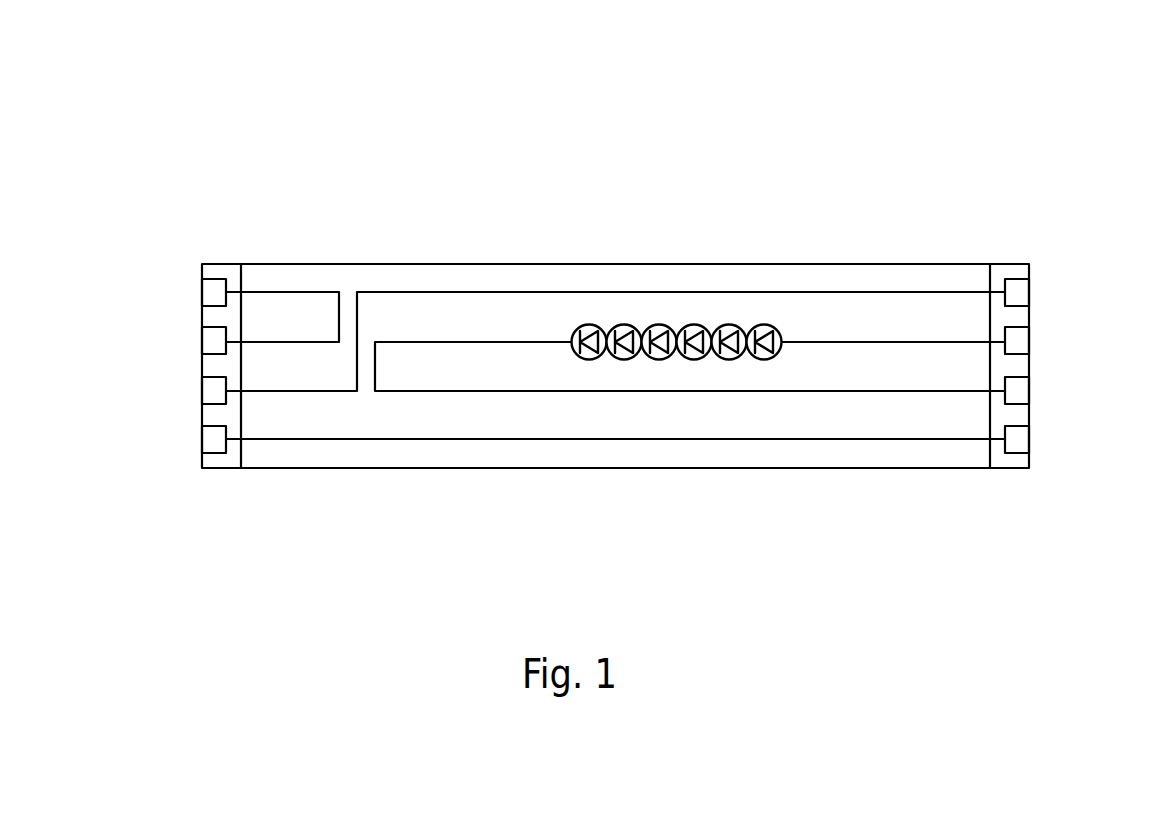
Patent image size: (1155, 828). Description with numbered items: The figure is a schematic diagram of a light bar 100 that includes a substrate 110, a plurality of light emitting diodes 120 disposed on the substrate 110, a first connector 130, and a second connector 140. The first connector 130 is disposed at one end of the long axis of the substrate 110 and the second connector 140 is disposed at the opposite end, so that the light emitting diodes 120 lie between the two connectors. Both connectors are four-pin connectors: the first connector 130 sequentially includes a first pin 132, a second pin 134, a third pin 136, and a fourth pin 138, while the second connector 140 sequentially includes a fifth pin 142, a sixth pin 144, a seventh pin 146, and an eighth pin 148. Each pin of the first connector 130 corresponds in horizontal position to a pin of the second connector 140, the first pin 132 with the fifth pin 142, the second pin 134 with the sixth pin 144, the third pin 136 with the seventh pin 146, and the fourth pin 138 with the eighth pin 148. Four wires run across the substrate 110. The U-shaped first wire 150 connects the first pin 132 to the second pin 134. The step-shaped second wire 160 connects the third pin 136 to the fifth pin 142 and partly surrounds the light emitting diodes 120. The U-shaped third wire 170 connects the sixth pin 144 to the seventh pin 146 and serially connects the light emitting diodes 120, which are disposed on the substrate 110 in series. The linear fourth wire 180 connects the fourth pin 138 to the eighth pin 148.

The light bar 100 is at (256, 130).
The substrate 110 is at (467, 263).
The light emitting diodes 120 is at (661, 324).
The first connector 130 is at (223, 263).
The first pin 132 is at (210, 293).
The second pin 134 is at (210, 341).
The third pin 136 is at (210, 391).
The fourth pin 138 is at (210, 441).
The second connector 140 is at (1010, 263).
The fifth pin 142 is at (1022, 292).
The sixth pin 144 is at (1022, 341).
The seventh pin 146 is at (1022, 391).
The eighth pin 148 is at (1022, 440).
The first wire 150 is at (339, 315).
The second wire 160 is at (520, 291).
The third wire 170 is at (498, 391).
The fourth wire 180 is at (704, 440).